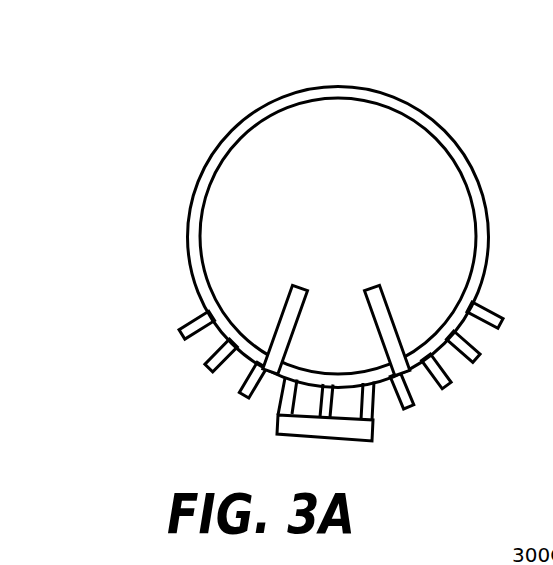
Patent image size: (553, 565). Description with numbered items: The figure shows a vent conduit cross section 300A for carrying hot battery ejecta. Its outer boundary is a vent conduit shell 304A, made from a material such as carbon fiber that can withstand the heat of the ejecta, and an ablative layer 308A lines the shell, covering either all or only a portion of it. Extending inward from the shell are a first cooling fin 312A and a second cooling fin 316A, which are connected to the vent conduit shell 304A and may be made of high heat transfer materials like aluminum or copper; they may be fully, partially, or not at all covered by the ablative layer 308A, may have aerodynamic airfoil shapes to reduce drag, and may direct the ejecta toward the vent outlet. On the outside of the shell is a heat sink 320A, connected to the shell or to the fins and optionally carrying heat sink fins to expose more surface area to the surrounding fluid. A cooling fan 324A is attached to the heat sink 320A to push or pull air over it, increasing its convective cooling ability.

The vent conduit cross section 300A is at (240, 110).
The vent conduit shell 304A is at (438, 123).
The ablative layer 308A is at (420, 83).
The first cooling fin 312A is at (311, 287).
The second cooling fin 316A is at (377, 286).
The heat sink 320A is at (196, 327).
The cooling fan 324A is at (278, 427).